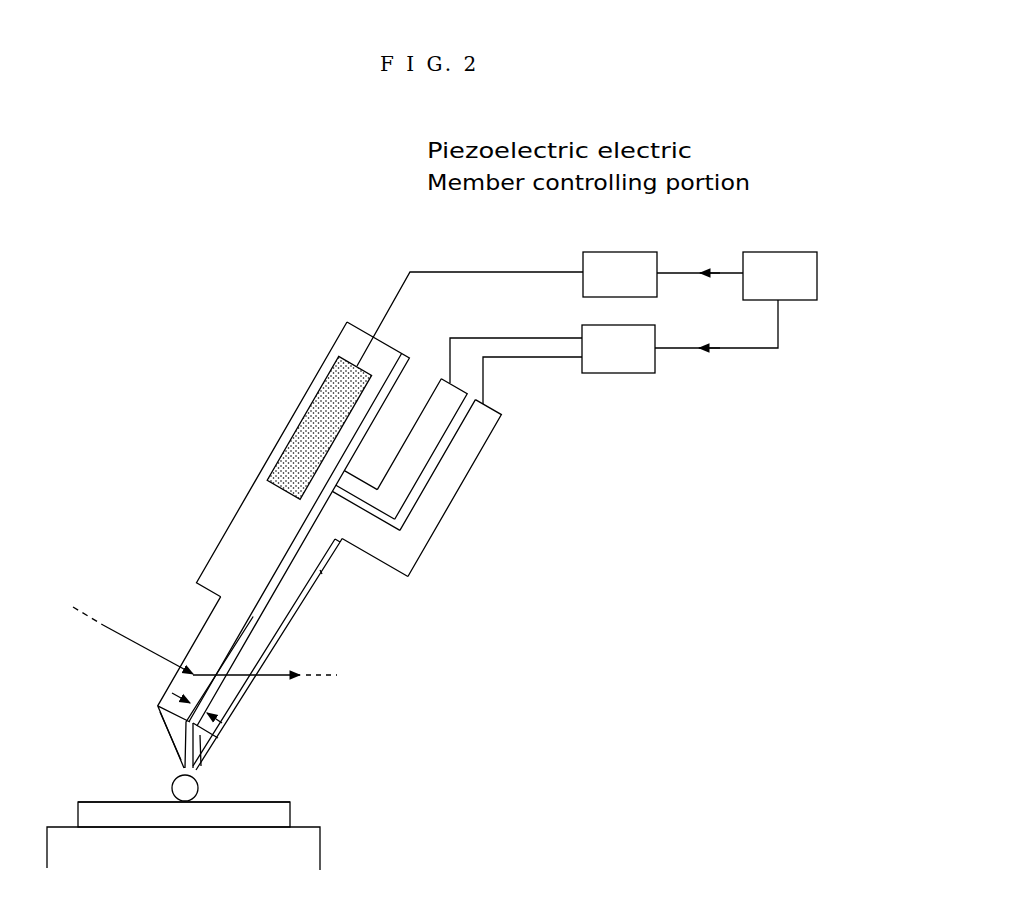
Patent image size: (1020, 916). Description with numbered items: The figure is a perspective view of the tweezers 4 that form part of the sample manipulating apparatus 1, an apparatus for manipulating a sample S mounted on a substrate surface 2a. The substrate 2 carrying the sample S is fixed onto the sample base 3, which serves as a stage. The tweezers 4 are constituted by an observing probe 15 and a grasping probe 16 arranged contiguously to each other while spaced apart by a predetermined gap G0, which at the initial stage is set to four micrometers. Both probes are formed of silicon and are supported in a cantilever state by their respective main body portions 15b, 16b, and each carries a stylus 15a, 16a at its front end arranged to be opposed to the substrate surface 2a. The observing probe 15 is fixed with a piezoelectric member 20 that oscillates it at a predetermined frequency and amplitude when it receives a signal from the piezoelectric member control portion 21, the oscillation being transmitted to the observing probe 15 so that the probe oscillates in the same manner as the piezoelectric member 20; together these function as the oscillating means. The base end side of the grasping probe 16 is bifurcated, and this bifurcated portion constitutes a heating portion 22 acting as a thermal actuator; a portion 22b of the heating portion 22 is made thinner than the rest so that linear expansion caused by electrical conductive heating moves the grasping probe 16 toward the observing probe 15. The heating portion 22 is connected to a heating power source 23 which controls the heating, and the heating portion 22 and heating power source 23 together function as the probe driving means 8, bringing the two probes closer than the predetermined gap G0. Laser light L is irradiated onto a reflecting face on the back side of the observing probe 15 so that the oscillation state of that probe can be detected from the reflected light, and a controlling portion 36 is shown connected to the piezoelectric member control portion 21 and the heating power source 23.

The sample manipulating apparatus 1 is at (170, 320).
The substrate 2 is at (293, 818).
The substrate surface 2a is at (257, 799).
The sample base 3 is at (307, 850).
The tweezers 4 is at (341, 333).
The probe driving means 8 is at (606, 384).
The observing probe 15 is at (195, 643).
The stylus 15a is at (173, 738).
The main body portion 15b is at (243, 530).
The grasping probe 16 is at (267, 622).
The stylus 16a is at (203, 762).
The main body portion 16b is at (315, 558).
The piezoelectric member 20 is at (310, 417).
The piezoelectric member control portion 21 is at (623, 275).
The heating portion 22 is at (433, 403).
The thin portion of heating portion 22b is at (382, 588).
The heating power source 23 is at (632, 362).
The controlling portion 36 is at (795, 288).
The sample S is at (170, 781).
The laser light L is at (140, 637).
The predetermined gap G0 is at (205, 703).